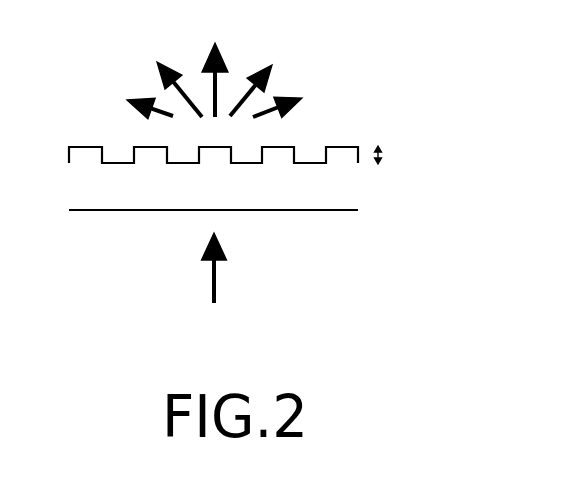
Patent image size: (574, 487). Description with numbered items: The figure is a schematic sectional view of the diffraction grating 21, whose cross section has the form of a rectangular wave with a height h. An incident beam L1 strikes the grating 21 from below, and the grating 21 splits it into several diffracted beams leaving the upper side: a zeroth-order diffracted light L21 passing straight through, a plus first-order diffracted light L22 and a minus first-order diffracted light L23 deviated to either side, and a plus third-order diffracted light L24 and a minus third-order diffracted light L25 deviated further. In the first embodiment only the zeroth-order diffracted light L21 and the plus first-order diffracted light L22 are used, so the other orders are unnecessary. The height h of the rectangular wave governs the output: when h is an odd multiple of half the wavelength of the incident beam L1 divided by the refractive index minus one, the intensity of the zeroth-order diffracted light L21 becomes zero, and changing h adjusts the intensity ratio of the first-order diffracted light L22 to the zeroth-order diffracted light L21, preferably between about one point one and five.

The diffraction grating 21 is at (376, 111).
The height h is at (396, 154).
The incident beam L1 is at (237, 269).
The zeroth-order diffracted light L21 is at (214, 61).
The plus first-order diffracted light L22 is at (278, 78).
The minus first-order diffracted light L23 is at (154, 73).
The plus third-order diffracted light L24 is at (307, 98).
The minus third-order diffracted light L25 is at (120, 97).